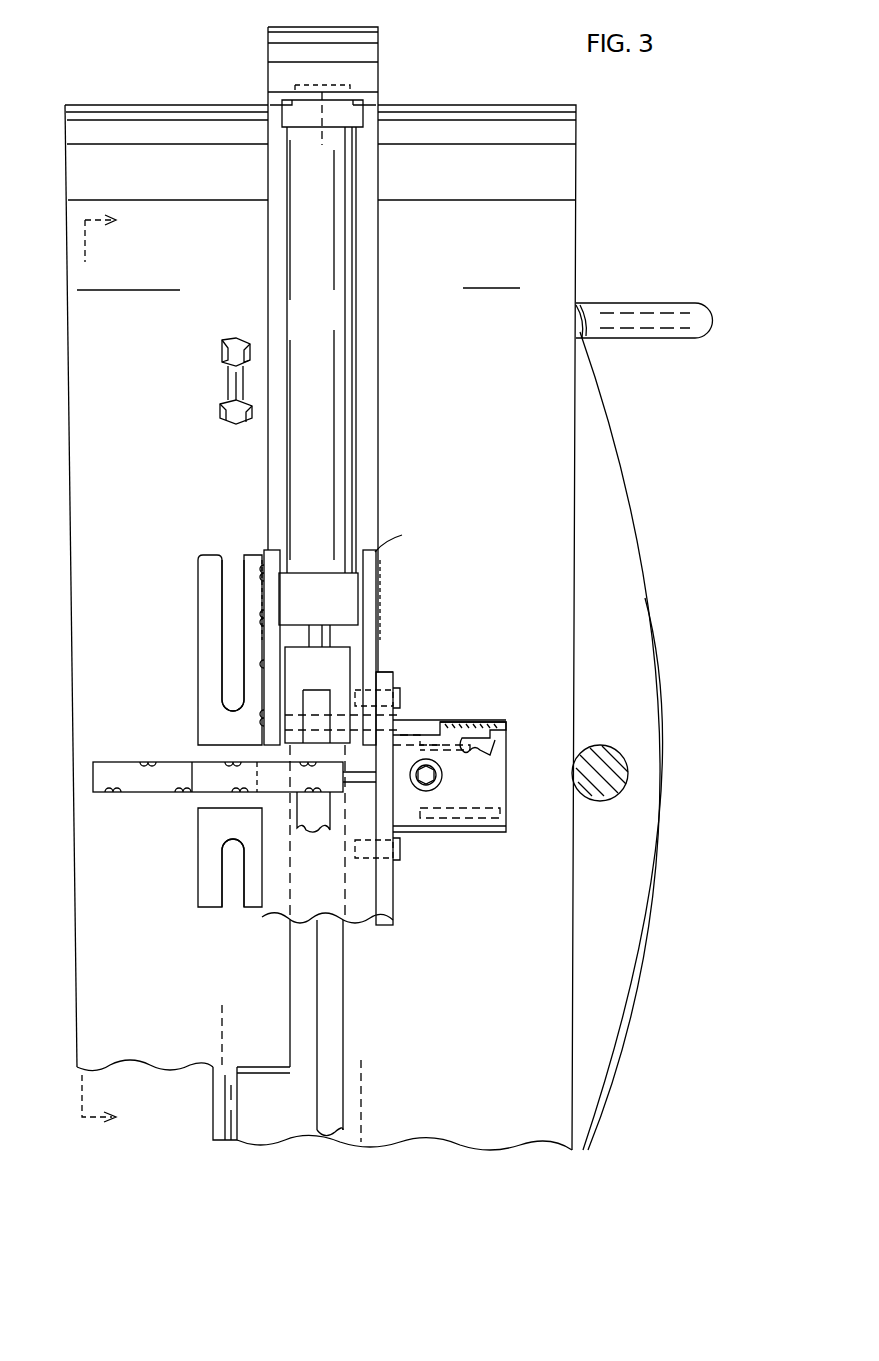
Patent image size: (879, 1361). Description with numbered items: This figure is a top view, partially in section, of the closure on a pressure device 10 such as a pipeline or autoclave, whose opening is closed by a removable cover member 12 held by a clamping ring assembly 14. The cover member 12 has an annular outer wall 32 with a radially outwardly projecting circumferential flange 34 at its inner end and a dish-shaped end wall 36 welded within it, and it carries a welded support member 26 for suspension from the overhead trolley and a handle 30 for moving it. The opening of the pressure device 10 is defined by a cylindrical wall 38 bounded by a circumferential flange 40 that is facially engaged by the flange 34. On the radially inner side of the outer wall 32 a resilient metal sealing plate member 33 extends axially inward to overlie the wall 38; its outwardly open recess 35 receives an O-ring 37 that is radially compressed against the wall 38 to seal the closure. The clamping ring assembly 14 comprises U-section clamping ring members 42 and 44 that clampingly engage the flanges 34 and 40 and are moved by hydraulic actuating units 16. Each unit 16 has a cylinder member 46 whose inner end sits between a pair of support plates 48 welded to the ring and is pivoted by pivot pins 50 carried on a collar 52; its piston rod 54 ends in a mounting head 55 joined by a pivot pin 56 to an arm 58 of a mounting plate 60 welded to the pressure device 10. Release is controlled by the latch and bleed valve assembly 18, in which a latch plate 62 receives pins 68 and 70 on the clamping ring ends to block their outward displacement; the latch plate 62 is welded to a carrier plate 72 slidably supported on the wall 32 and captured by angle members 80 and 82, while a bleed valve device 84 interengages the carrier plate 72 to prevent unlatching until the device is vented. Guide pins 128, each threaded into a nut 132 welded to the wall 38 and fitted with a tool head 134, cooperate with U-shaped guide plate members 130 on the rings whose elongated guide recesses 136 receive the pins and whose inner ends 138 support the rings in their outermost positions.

The pressure device 10 is at (102, 68).
The cover member 12 is at (618, 156).
The clamping ring assembly 14 is at (415, 73).
The hydraulic actuating unit 16 is at (385, 432).
The latch and bleed valve assembly 18 is at (480, 684).
The support member 26 is at (602, 772).
The handle 30 is at (705, 310).
The outer wall 32 is at (418, 1130).
The sealing plate member 33 is at (270, 1130).
The circumferential flange 34 is at (336, 1015).
The recess 35 is at (237, 1132).
The end wall 36 is at (625, 1020).
The O-ring 37 is at (215, 1125).
The cylindrical wall 38 is at (250, 1052).
The circumferential flange 40 is at (297, 1055).
The clamping ring member 42 is at (268, 48).
The clamping ring member 44 is at (307, 905).
The cylinder member 46 is at (350, 480).
The support plate 48 is at (268, 552).
The pivot pin 50 is at (258, 565).
The collar 52 is at (350, 585).
The piston rod 54 is at (345, 635).
The mounting head 55 is at (330, 656).
The pivot pin 56 is at (400, 722).
The arm 58 is at (315, 692).
The mounting plate 60 is at (132, 772).
The latch plate 62 is at (385, 878).
The pin 68 is at (400, 696).
The pin 70 is at (398, 850).
The carrier plate 72 is at (522, 748).
The angle member 80 is at (478, 735).
The angle member 82 is at (486, 834).
The bleed valve device 84 is at (450, 768).
The guide pin 128 is at (228, 392).
The guide plate member 130 is at (210, 630).
The nut 132 is at (222, 420).
The tool head 134 is at (225, 352).
The guide recess 136 is at (230, 600).
The inner end 138 is at (232, 692).